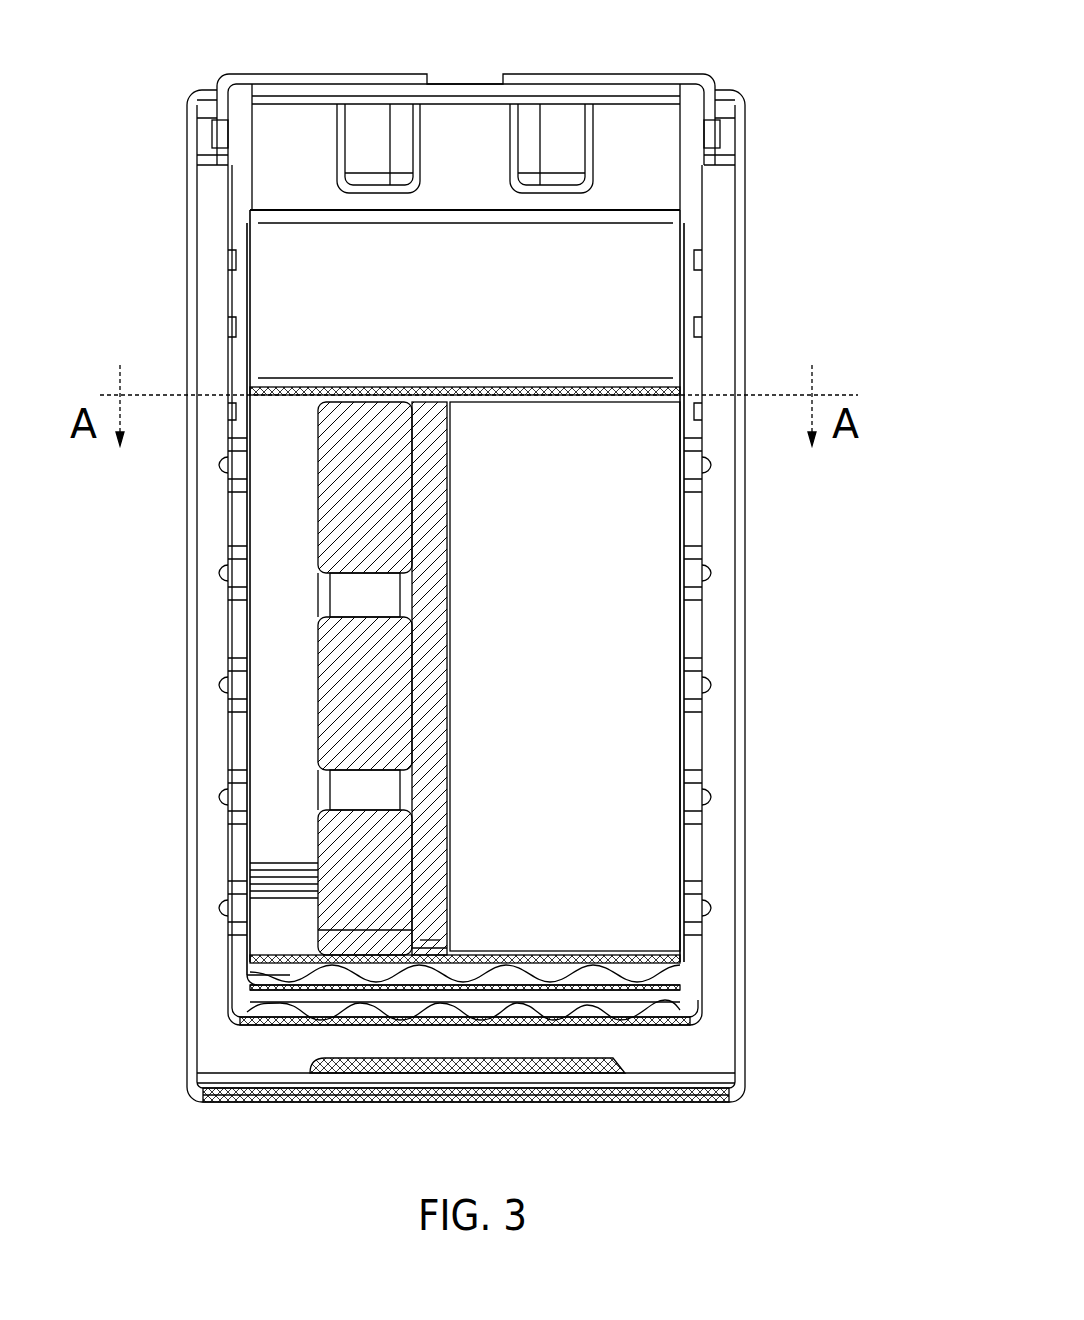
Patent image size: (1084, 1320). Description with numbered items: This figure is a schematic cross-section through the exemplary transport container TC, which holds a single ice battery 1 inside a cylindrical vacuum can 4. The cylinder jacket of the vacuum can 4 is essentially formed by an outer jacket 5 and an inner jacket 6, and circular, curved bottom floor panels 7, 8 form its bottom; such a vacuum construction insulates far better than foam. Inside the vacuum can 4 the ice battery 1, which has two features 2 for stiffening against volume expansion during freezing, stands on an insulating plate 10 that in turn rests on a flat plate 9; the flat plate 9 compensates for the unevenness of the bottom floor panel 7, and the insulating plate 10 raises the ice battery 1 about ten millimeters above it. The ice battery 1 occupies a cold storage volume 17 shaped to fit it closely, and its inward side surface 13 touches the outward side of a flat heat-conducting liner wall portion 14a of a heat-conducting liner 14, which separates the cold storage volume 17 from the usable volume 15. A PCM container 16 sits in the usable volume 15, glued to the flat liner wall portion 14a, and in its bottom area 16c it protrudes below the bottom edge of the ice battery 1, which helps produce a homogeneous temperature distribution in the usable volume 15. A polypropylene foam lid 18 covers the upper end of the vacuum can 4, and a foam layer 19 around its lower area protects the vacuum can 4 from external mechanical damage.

The transport container TC is at (787, 122).
The lid 18 is at (660, 75).
The cold storage volume 17 is at (285, 513).
The PCM container 16 is at (430, 557).
The bottom area 16c is at (427, 930).
The usable volume 15 is at (638, 582).
The heat-conducting liner 14 is at (684, 778).
The flat heat-conducting liner wall portion 14a is at (412, 770).
The inward side surface 13 is at (405, 648).
The features for stiffening 2 is at (360, 600).
The ice battery 1 is at (320, 838).
The vacuum can 4 is at (706, 688).
The outer jacket 5 is at (240, 946).
The inner jacket 6 is at (247, 950).
The bottom floor panel 7 is at (640, 978).
The bottom floor panel 8 is at (623, 1023).
The flat plate 9 is at (428, 935).
The insulating plate 10 is at (360, 940).
The foam layer 19 is at (542, 1045).